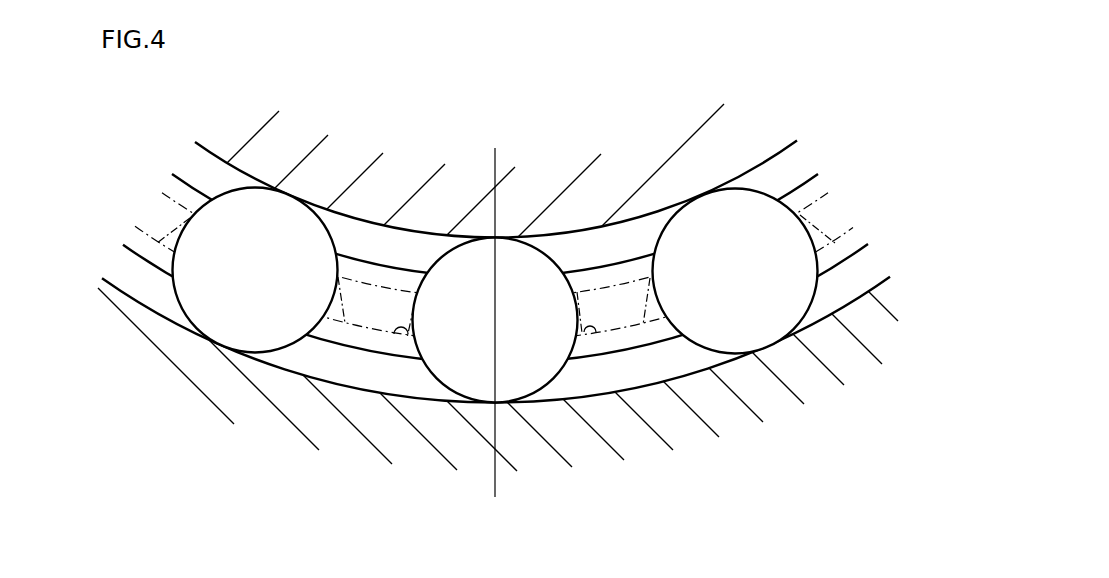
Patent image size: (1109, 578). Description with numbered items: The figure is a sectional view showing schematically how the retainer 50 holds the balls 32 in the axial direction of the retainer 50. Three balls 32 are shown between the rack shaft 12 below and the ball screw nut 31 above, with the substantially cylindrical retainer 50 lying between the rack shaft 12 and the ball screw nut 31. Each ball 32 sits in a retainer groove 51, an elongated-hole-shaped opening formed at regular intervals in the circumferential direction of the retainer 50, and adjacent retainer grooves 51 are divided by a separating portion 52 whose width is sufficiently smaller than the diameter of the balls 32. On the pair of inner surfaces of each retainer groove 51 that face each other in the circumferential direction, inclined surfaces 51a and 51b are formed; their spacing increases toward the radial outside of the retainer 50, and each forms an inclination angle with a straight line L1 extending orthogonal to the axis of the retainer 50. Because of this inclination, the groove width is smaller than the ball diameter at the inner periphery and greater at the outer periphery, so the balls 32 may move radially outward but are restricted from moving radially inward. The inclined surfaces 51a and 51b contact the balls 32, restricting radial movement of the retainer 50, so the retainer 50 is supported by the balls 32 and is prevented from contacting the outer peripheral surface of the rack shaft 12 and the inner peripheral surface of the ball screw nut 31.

The rack shaft 12 is at (735, 150).
The ball screw nut 31 is at (862, 313).
The balls 32 is at (508, 246).
The retainer 50 is at (800, 195).
The retainer groove 51 is at (411, 336).
The inclined surface 51a is at (582, 325).
The inclined surface 51b is at (401, 330).
The separating portion 52 is at (621, 320).
The straight line L1 is at (495, 168).